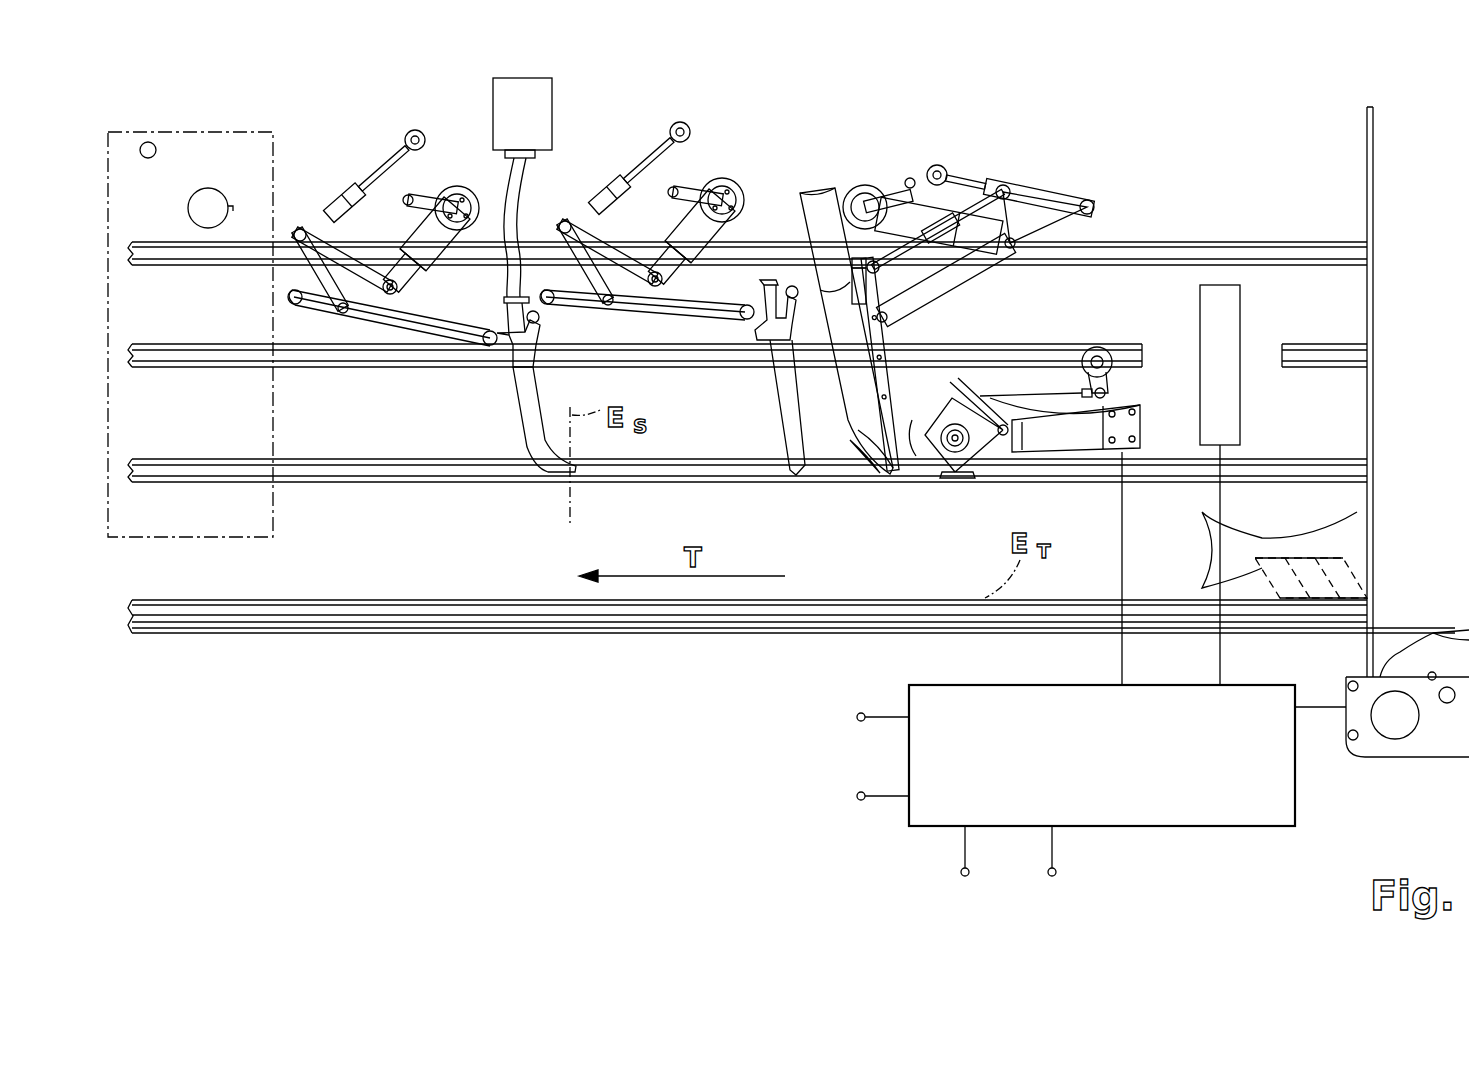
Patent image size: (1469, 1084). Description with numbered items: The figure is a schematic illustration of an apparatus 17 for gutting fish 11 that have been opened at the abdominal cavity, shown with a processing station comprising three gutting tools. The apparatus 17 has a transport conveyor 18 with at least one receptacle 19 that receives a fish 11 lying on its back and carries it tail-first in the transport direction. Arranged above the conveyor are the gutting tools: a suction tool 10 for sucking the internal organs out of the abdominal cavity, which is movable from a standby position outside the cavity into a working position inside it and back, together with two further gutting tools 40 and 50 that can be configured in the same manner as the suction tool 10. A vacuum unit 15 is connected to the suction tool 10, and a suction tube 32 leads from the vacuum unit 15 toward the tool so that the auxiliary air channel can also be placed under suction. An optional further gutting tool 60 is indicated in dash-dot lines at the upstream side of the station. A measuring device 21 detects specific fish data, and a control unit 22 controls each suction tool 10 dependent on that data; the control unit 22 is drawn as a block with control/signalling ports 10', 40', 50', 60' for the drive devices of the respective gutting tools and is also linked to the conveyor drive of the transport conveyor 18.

The suction tool 10 is at (432, 327).
The fish 11 is at (1343, 530).
The vacuum unit 15 is at (548, 102).
The apparatus 17 is at (507, 730).
The transport conveyor 18 is at (1320, 632).
The receptacle 19 is at (1327, 571).
The measuring device 21 is at (1228, 308).
The control unit 22 is at (1170, 811).
The suction tube 32 is at (511, 190).
The gutting tool 40 is at (672, 323).
The gutting tool 50 is at (943, 345).
The further gutting tool 60 is at (187, 368).
The control/signalling port 10' is at (860, 718).
The control/signalling port 40' is at (860, 797).
The control/signalling port 50' is at (969, 871).
The control/signalling port 60' is at (1057, 871).